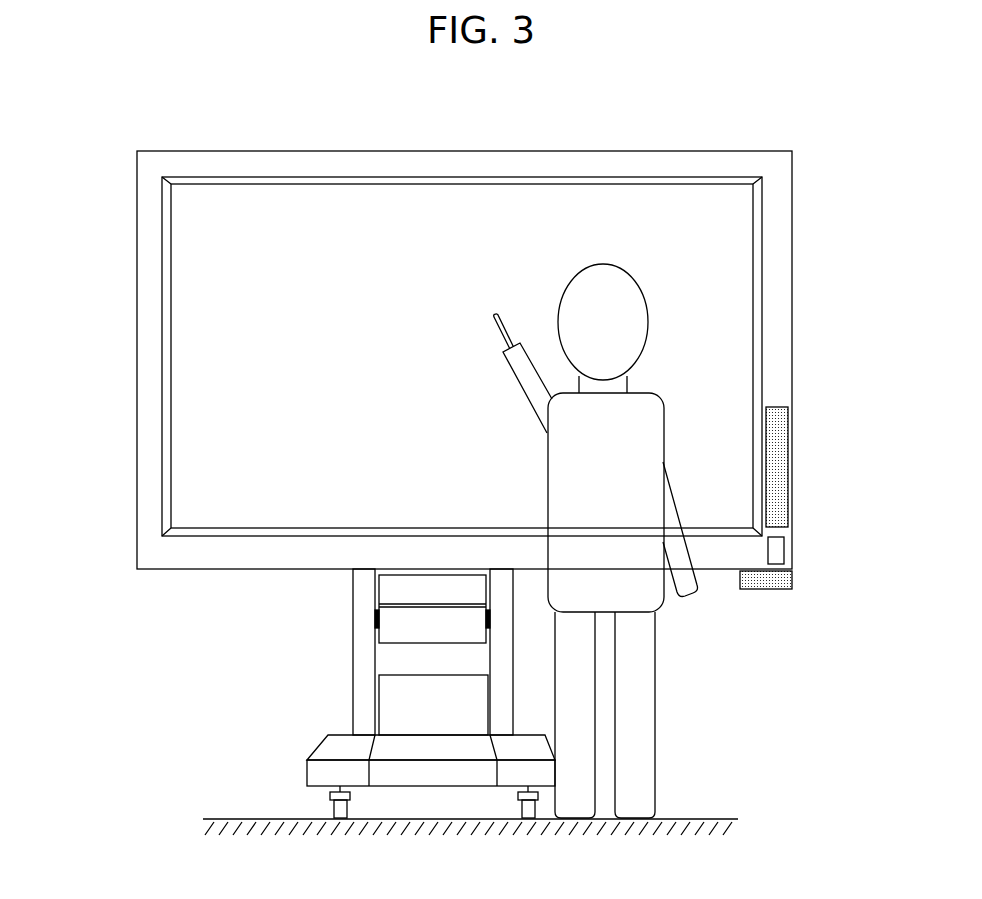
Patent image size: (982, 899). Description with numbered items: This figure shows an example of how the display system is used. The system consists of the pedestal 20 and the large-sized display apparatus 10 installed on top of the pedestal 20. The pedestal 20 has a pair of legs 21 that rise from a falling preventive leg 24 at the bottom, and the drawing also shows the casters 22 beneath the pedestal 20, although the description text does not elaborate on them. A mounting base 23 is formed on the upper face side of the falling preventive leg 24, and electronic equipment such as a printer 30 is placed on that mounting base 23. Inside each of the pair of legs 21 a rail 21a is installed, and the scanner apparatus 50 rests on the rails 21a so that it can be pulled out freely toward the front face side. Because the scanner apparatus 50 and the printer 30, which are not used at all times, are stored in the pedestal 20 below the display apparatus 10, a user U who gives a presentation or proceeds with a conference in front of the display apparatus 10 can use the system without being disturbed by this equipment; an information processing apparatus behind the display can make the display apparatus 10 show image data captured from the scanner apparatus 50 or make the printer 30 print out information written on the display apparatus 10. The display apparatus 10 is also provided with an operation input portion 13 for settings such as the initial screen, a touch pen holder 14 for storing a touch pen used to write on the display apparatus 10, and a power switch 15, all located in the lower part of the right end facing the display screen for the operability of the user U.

The display apparatus 10 is at (126, 377).
The operation input portion 13 is at (780, 450).
The touch pen holder 14 is at (765, 590).
The power switch 15 is at (778, 550).
The user U is at (650, 320).
The pedestal 20 is at (388, 720).
The legs 21 is at (365, 665).
The rails 21a is at (376, 618).
The scanner apparatus 50 is at (387, 633).
The printer 30 is at (387, 702).
The mounting base 23 is at (433, 735).
The falling preventive leg 24 is at (433, 772).
The casters 22 is at (325, 773).